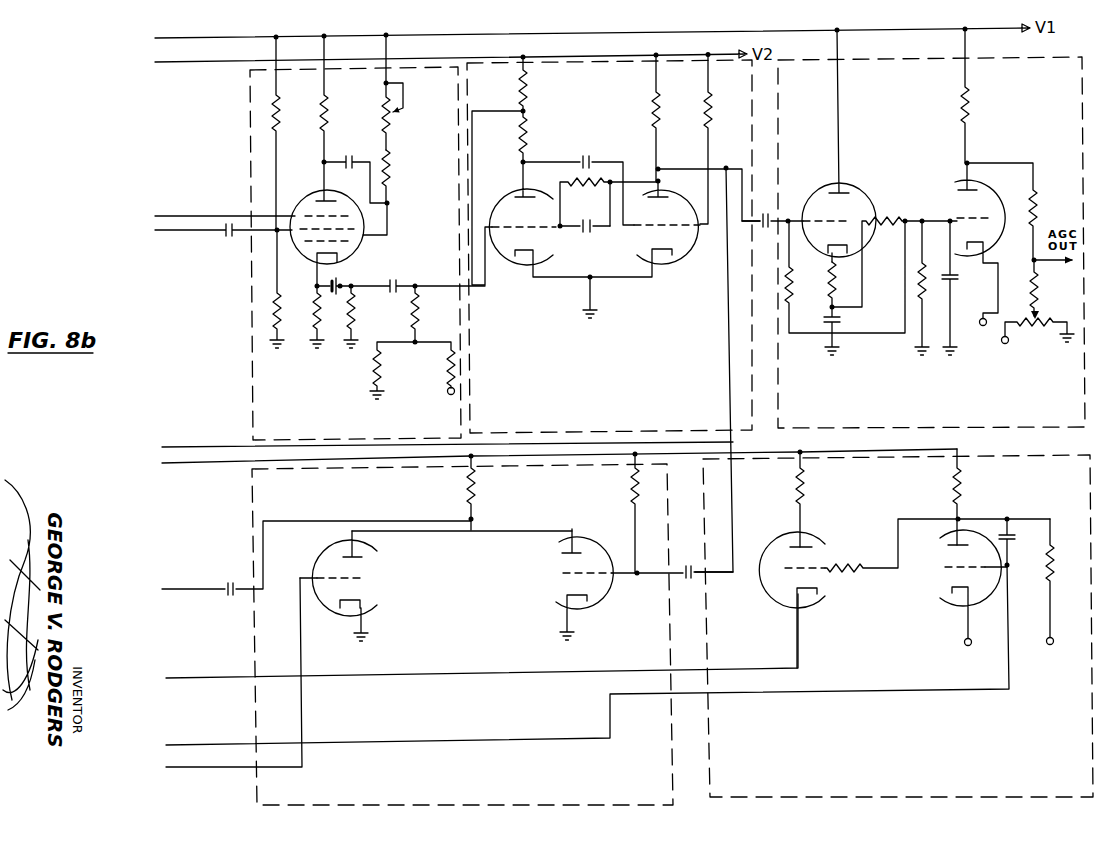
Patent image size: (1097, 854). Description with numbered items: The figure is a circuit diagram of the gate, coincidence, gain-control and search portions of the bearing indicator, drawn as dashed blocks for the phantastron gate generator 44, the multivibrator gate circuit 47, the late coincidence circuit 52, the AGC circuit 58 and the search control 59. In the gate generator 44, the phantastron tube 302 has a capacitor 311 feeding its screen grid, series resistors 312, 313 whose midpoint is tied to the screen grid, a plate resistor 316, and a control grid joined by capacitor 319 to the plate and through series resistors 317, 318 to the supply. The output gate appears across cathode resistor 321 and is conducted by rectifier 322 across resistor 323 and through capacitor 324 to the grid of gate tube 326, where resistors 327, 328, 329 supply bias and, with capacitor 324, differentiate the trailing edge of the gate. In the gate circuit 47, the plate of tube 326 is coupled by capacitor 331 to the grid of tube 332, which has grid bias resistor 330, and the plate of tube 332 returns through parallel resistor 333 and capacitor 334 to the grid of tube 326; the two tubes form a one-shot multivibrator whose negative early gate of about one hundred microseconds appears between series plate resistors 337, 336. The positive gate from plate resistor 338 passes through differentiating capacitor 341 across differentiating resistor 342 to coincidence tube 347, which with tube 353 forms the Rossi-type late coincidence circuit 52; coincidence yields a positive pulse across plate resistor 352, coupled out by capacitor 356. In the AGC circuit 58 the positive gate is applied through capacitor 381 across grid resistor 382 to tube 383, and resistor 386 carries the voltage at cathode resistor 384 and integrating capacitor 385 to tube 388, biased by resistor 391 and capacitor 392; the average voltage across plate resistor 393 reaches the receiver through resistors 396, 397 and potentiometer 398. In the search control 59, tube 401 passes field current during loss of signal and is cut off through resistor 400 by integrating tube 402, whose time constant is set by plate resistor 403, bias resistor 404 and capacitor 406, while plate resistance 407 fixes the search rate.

The gate generator 44 is at (363, 417).
The gate circuit 47 is at (615, 409).
The coincidence circuit 52 is at (475, 767).
The AGC circuit 58 is at (943, 402).
The control 59 is at (910, 754).
The phantastron tube 302 is at (360, 246).
The capacitor 311 is at (226, 238).
The series resistor 312 is at (278, 108).
The series resistor 313 is at (275, 306).
The plate resistor 316 is at (327, 105).
The series resistor 317 is at (391, 170).
The series resistor 318 is at (385, 116).
The capacitor 319 is at (351, 156).
The cathode resistor 321 is at (313, 345).
The rectifier 322 is at (344, 282).
The resistor 323 is at (350, 345).
The capacitor 324 is at (399, 283).
The gate circuit tube 326 is at (519, 265).
The resistor 327 is at (370, 379).
The resistor 328 is at (448, 362).
The resistor 329 is at (414, 313).
The grid bias resistor 330 is at (708, 108).
The capacitor 331 is at (590, 157).
The tube 332 is at (673, 252).
The resistor 333 is at (577, 180).
The capacitor 334 is at (585, 232).
The series plate resistor 336 is at (528, 131).
The series plate resistor 337 is at (528, 96).
The plate resistor 338 is at (655, 100).
The differentiating capacitor 341 is at (674, 581).
The differentiating resistor 342 is at (631, 485).
The coincidence tube 347 is at (601, 602).
The plate resistor 352 is at (480, 489).
The tube 353 is at (327, 606).
The coupling capacitor 356 is at (227, 587).
The capacitor 381 is at (768, 214).
The grid resistor 382 is at (787, 291).
The tube 383 is at (847, 185).
The cathode resistor 384 is at (835, 293).
The capacitor 385 is at (838, 323).
The resistor 386 is at (882, 216).
The tube 388 is at (960, 184).
The resistor 391 is at (918, 280).
The capacitor 392 is at (955, 281).
The plate resistor 393 is at (963, 101).
The resistor 396 is at (1037, 194).
The resistor 397 is at (1040, 281).
The potentiometer 398 is at (1044, 318).
The resistor 400 is at (855, 567).
The tube 401 is at (780, 597).
The tube 402 is at (948, 599).
The plate resistor 403 is at (962, 496).
The bias resistor 404 is at (1057, 554).
The capacitor 406 is at (1011, 532).
The plate resistance 407 is at (812, 481).